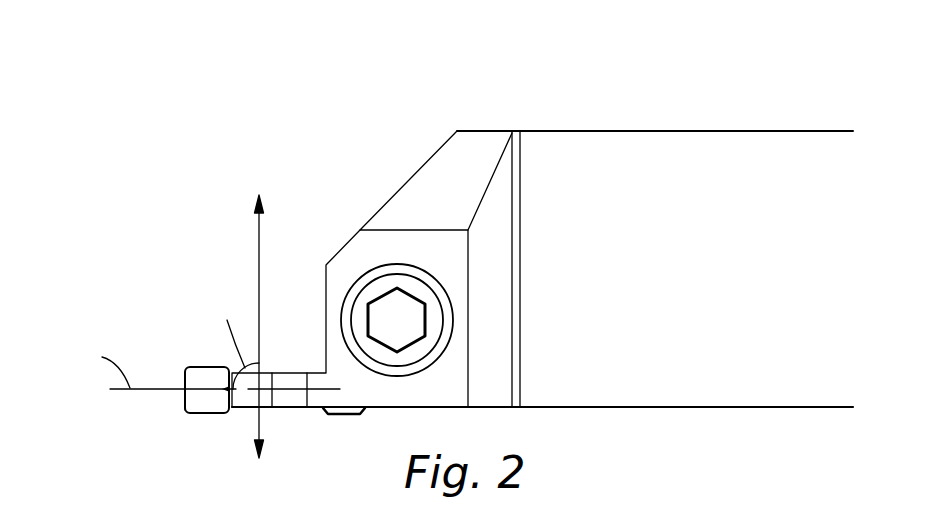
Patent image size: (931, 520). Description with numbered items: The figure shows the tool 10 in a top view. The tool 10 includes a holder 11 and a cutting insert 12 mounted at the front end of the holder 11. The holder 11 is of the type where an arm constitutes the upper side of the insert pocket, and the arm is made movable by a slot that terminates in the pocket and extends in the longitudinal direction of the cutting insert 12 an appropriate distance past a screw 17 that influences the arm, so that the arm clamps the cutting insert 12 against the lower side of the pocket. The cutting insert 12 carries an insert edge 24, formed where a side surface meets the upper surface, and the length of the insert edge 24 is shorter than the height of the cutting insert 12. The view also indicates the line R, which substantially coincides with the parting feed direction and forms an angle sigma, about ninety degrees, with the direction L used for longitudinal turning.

The tool 10 is at (467, 240).
The holder 11 is at (628, 108).
The cutting insert 12 is at (178, 342).
The screw 17 is at (395, 310).
The insert edge 24 is at (185, 402).